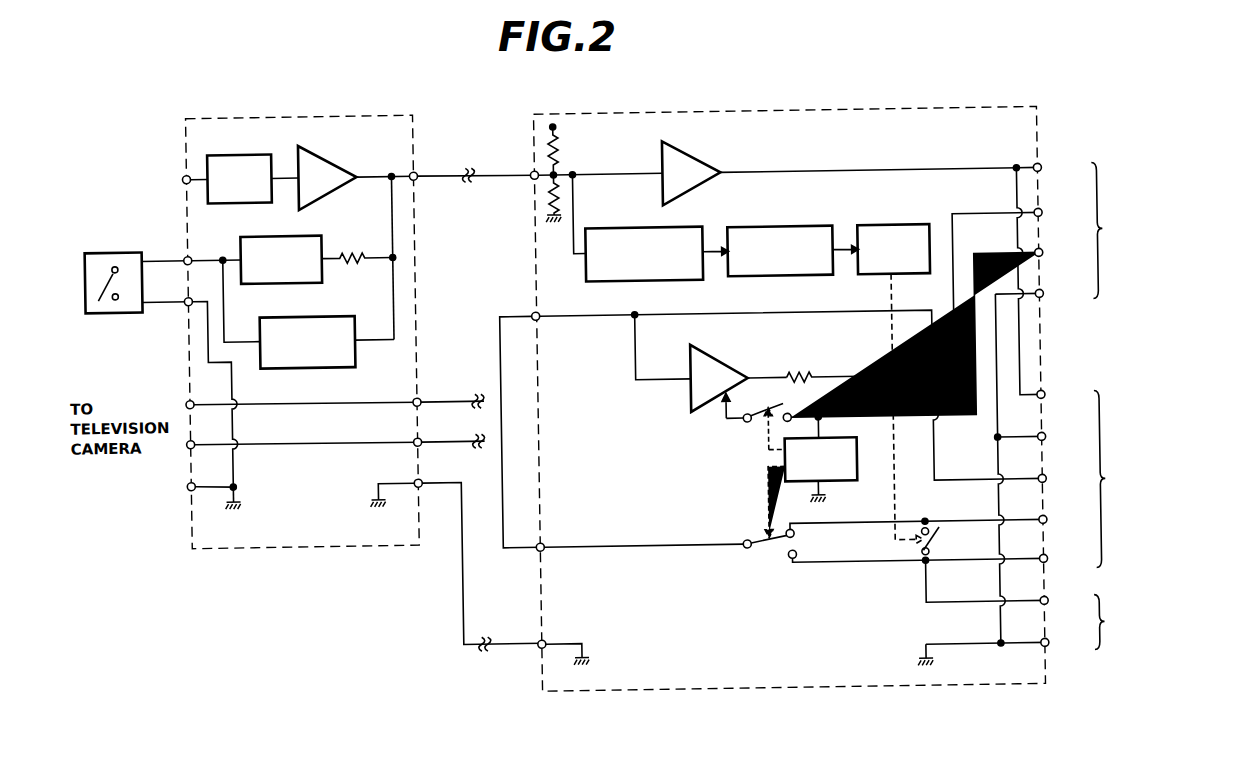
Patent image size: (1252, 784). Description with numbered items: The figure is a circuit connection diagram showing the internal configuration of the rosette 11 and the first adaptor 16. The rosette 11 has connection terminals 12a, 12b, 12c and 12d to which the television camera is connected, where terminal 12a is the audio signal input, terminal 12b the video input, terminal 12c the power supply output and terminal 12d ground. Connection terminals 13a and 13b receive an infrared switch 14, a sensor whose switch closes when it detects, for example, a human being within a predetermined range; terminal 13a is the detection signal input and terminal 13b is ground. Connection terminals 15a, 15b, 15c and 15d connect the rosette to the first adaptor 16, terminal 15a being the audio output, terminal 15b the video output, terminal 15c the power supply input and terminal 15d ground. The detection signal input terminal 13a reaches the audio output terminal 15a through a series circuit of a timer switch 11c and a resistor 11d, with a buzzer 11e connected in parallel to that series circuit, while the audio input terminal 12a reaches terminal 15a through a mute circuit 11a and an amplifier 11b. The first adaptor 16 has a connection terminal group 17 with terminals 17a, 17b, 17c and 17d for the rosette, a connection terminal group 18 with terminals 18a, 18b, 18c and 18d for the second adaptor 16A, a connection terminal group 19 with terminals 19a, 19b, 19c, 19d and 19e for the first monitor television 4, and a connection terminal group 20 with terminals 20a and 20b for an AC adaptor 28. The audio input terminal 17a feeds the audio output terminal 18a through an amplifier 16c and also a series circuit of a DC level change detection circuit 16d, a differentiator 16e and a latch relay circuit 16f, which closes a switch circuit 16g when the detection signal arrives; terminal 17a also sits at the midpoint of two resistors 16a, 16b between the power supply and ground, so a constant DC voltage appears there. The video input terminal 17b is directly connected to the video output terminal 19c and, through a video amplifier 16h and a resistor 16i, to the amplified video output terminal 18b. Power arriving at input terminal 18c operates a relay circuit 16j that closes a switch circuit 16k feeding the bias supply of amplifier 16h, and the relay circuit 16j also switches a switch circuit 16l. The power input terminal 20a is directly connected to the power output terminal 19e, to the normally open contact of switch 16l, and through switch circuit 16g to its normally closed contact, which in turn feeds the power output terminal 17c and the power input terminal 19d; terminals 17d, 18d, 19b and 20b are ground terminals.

The rosette 11 is at (302, 112).
The mute circuit 11a is at (236, 149).
The amplifier 11b is at (333, 163).
The timer switch 11c is at (243, 231).
The resistor 11d is at (353, 250).
The buzzer 11e is at (298, 312).
The connection terminal 12a is at (186, 171).
The connection terminal 12b is at (187, 396).
The connection terminal 12c is at (187, 441).
The connection terminal 12d is at (187, 483).
The connection terminal 13a is at (187, 251).
The connection terminal 13b is at (187, 298).
The infrared switch 14 is at (110, 245).
The connection terminal 15a is at (419, 170).
The connection terminal 15b is at (420, 397).
The connection terminal 15c is at (420, 437).
The connection terminal 15d is at (420, 478).
The first adaptor 16 is at (705, 113).
The resistor 16a is at (562, 152).
The resistor 16b is at (563, 205).
The amplifier 16c is at (704, 168).
The DC level change detection circuit 16d is at (639, 228).
The differentiator 16e is at (780, 229).
The latch relay circuit 16f is at (884, 229).
The switch circuit 16g is at (932, 547).
The video amplifier 16h is at (733, 348).
The resistor 16i is at (800, 375).
The relay circuit 16j is at (856, 461).
The switch circuit 16k is at (752, 419).
The switch circuit 16l is at (748, 540).
The second adaptor 16A is at (1172, 235).
The connection terminal group 17 is at (495, 218).
The connection terminal 17a is at (536, 178).
The connection terminal 17b is at (536, 311).
The connection terminal 17c is at (537, 550).
The connection terminal 17d is at (537, 640).
The connection terminal group 18 is at (1124, 247).
The connection terminal 18a is at (1045, 174).
The connection terminal 18b is at (1045, 219).
The connection terminal 18c is at (1045, 259).
The connection terminal 18d is at (1045, 300).
The connection terminal group 19 is at (1123, 497).
The connection terminal 19a is at (1045, 401).
The connection terminal 19b is at (1045, 443).
The connection terminal 19c is at (1045, 485).
The connection terminal 19d is at (1045, 526).
The connection terminal 19e is at (1045, 565).
The connection terminal group 20 is at (1123, 640).
The connection terminal 20a is at (1045, 607).
The connection terminal 20b is at (1045, 649).
The first monitor television 4 is at (1181, 486).
The AC adaptor 28 is at (1185, 619).